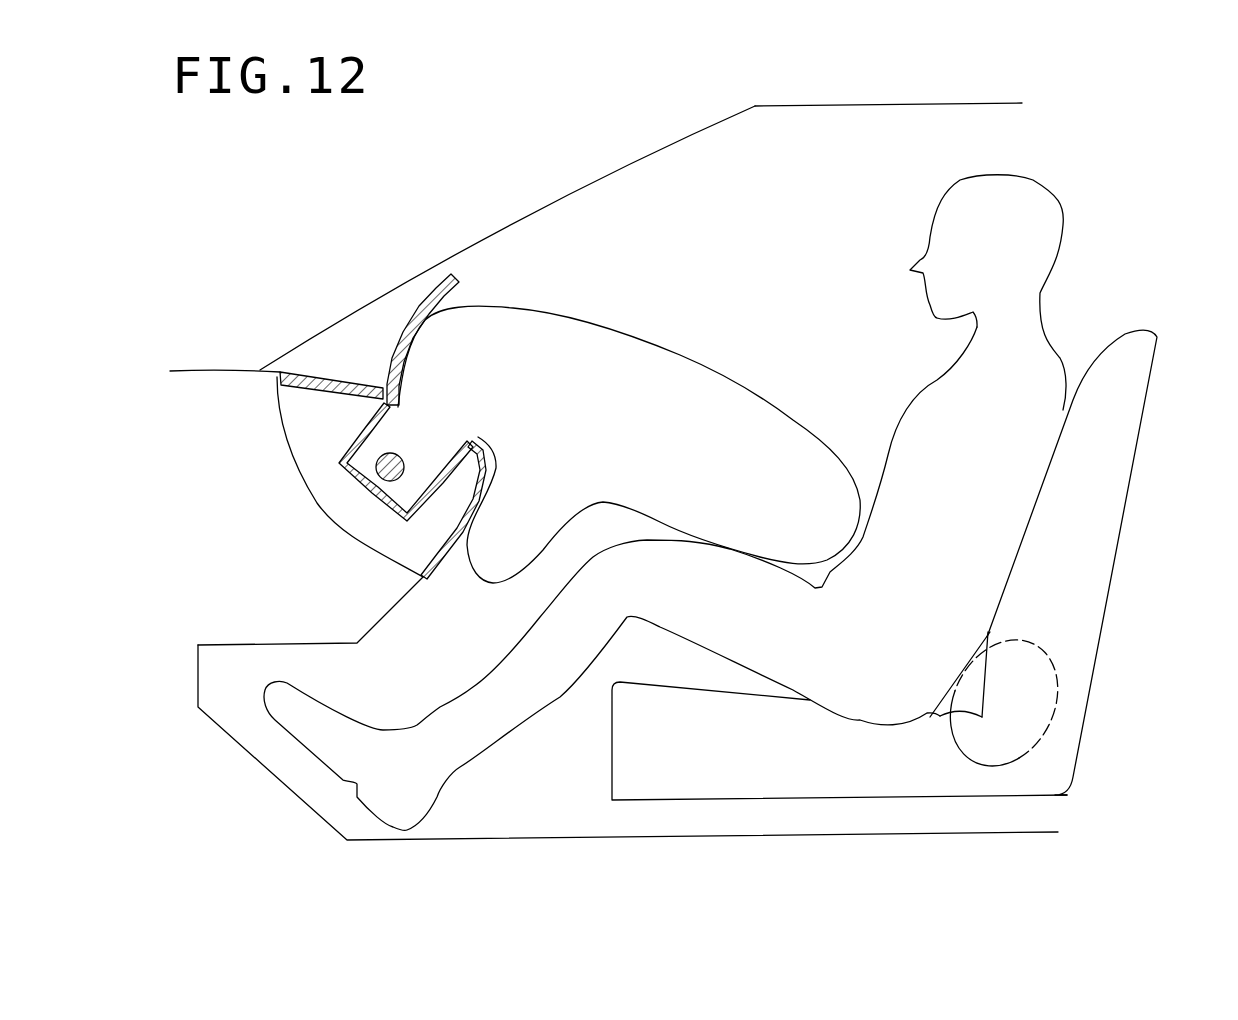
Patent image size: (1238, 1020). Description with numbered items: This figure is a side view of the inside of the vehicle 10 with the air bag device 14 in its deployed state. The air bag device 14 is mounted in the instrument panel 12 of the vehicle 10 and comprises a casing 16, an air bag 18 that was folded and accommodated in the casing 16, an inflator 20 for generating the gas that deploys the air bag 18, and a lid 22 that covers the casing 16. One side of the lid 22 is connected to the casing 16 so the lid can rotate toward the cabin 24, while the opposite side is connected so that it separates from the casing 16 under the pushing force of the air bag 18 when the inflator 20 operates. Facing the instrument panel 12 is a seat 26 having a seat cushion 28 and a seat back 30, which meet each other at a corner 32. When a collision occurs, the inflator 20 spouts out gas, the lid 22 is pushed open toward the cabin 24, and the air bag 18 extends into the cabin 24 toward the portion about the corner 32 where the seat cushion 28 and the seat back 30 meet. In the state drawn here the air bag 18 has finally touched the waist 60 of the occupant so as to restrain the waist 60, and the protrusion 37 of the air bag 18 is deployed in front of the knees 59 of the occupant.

The vehicle 10 is at (890, 90).
The instrument panel 12 is at (353, 370).
The air bag device 14 is at (335, 480).
The casing 16 is at (362, 498).
The air bag 18 is at (718, 373).
The inflator 20 is at (355, 455).
The lid 22 is at (455, 280).
The cabin 24 is at (788, 228).
The seat 26 is at (836, 806).
The seat cushion 28 is at (913, 760).
The seat back 30 is at (1100, 552).
The corner 32 is at (1063, 665).
The protrusion 37 is at (487, 568).
The knees 59 is at (656, 590).
The waist 60 is at (913, 634).